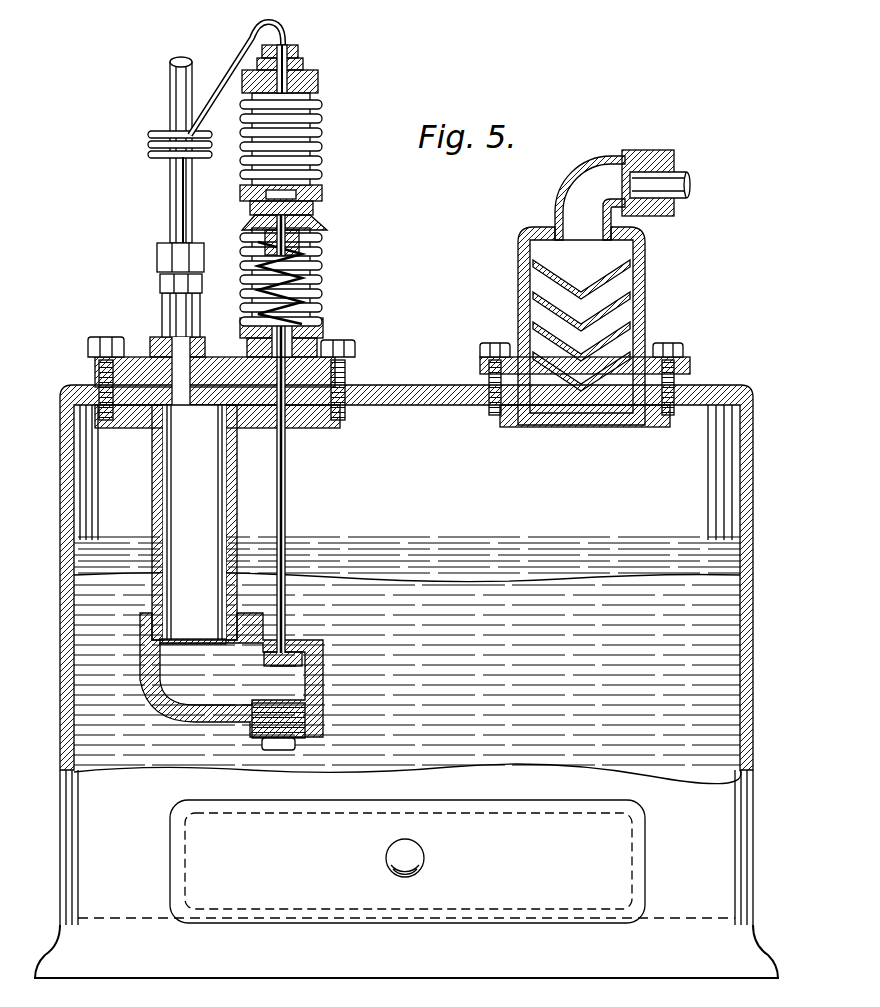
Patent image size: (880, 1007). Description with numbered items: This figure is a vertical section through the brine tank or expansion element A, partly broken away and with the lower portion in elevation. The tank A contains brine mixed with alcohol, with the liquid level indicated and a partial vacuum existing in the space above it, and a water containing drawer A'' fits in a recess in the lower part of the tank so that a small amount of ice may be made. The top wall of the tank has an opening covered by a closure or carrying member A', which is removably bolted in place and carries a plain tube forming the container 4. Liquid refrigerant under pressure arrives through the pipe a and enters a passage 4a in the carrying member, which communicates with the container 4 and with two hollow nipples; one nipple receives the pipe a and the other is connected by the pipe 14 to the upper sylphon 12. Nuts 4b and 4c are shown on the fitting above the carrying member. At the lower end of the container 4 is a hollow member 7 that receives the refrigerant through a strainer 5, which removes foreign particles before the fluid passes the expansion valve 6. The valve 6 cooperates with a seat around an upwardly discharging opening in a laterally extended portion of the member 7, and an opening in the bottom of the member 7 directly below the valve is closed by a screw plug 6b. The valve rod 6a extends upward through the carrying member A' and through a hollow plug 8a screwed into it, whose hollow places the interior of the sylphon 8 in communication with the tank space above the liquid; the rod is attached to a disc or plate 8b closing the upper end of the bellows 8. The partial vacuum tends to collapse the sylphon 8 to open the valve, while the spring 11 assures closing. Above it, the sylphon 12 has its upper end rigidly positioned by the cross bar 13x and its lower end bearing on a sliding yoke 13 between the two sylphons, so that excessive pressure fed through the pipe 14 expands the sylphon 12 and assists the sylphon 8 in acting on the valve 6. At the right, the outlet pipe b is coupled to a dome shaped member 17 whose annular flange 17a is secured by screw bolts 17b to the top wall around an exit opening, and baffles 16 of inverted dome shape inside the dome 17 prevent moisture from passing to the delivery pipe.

The brine tank A is at (406, 681).
The closure or carrying member A' is at (221, 370).
The water containing drawer A'' is at (407, 861).
The container 4 is at (193, 348).
The passage 4a is at (190, 393).
The nut 4b is at (158, 256).
The lock nut 4c is at (162, 286).
The strainer 5 is at (211, 640).
The expansion valve 6 is at (278, 668).
The valve rod 6a is at (285, 480).
The screw plug 6b is at (281, 750).
The hollow member 7 is at (231, 675).
The sylphon 8 is at (320, 290).
The hollow plug 8a is at (322, 334).
The disc or plate 8b is at (318, 228).
The spring 11 is at (306, 266).
The sylphon 12 is at (316, 149).
The sliding yoke 13 is at (320, 201).
The cross bar 13x is at (322, 76).
The pipe 14 is at (232, 74).
The pipe a is at (170, 170).
The baffles 16 is at (590, 290).
The dome shaped member 17 is at (640, 290).
The annular flange 17a is at (688, 364).
The screw bolts 17b is at (493, 344).
The outlet pipe b is at (682, 180).